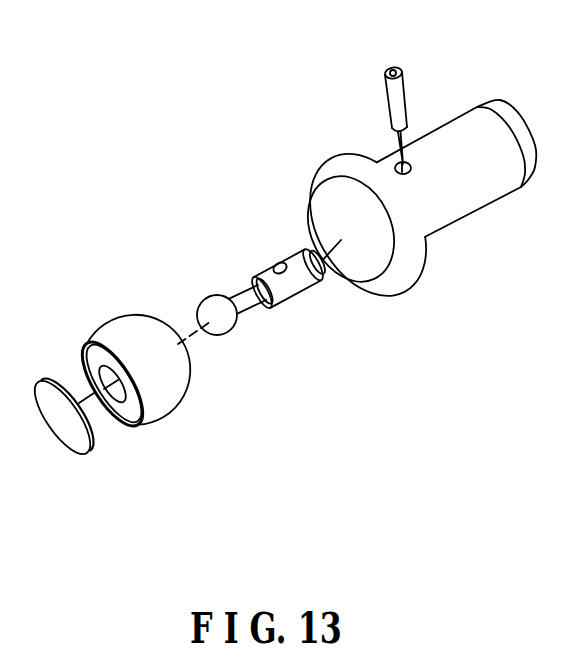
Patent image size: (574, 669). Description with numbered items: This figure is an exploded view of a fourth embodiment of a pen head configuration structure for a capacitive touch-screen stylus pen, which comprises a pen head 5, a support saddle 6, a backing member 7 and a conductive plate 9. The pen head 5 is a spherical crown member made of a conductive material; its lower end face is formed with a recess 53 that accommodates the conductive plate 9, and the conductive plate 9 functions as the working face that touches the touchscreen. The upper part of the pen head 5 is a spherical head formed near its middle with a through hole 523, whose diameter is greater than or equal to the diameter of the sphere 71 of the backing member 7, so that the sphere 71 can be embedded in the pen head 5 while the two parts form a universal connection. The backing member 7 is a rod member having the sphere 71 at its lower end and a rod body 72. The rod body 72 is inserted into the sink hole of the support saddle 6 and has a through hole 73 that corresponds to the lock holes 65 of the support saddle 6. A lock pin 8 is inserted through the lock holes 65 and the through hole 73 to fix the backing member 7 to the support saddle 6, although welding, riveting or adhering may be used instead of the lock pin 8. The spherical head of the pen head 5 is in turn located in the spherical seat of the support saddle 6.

The pen head 5 is at (130, 405).
The support saddle 6 is at (463, 195).
The backing member 7 is at (261, 297).
The lock pin 8 is at (397, 93).
The conductive plate 9 is at (63, 428).
The recess 53 is at (127, 412).
The lock holes 65 is at (397, 167).
The sphere 71 is at (212, 305).
The rod body 72 is at (283, 288).
The through hole 73 is at (278, 263).
The through hole 523 is at (84, 355).